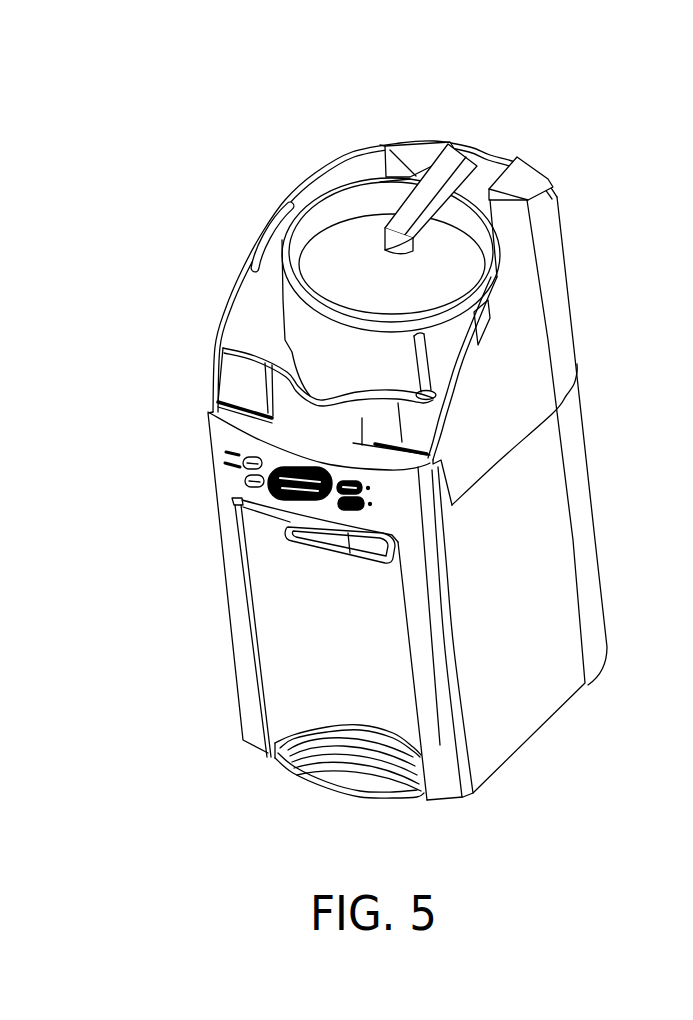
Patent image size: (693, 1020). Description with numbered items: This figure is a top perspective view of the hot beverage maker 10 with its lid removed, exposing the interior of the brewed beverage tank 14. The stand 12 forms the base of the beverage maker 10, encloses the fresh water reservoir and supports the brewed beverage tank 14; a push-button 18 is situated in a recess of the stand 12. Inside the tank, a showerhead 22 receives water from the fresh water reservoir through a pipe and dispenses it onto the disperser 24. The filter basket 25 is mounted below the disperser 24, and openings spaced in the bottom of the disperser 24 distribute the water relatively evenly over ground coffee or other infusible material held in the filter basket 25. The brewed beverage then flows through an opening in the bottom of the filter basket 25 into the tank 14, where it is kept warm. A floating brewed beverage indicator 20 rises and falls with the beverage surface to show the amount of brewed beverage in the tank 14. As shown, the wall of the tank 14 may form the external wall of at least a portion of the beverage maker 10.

The hot beverage maker 10 is at (190, 121).
The stand 12 is at (535, 707).
The brewed beverage tank 14 is at (553, 305).
The push-button 18 is at (335, 537).
The floating brewed beverage indicator 20 is at (428, 356).
The showerhead 22 is at (447, 170).
The disperser 24 is at (357, 212).
The filter basket 25 is at (280, 304).